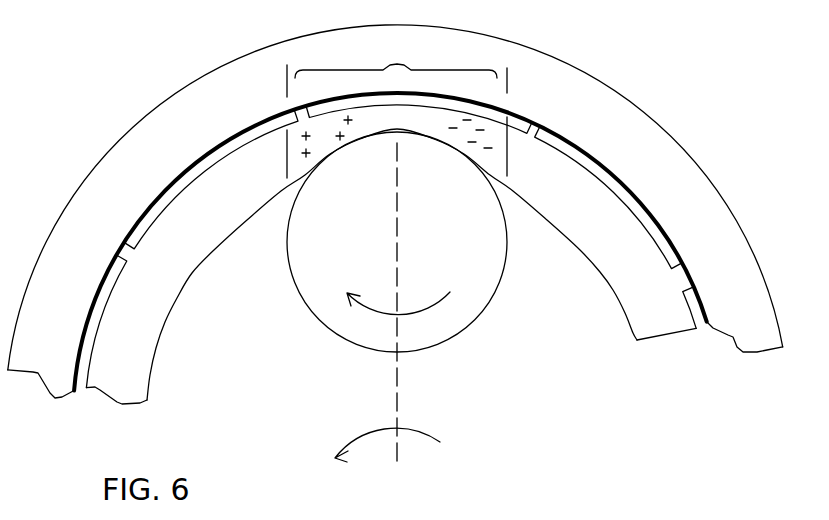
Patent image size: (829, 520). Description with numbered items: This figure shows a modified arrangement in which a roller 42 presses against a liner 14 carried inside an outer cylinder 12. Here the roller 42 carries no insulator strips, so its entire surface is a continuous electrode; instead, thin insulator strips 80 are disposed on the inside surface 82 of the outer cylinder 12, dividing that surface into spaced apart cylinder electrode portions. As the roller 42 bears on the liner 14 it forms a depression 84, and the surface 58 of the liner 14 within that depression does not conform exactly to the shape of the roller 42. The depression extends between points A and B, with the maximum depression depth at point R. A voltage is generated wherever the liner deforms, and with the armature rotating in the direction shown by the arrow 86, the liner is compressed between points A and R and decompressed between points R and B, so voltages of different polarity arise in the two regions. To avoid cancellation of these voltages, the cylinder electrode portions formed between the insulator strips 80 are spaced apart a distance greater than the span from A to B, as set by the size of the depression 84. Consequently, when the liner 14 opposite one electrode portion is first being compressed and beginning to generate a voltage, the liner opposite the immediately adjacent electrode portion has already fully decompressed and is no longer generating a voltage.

The outer cylinder 12 is at (620, 123).
The liner 14 is at (120, 362).
The roller 42 is at (497, 293).
The surface of the liner 58 is at (183, 282).
The insulator strips 80 is at (190, 182).
The inside surface of the outer cylinder 82 is at (390, 274).
The depression 84 is at (397, 109).
The arrow 86 is at (417, 437).
The point of maximum depression depth R is at (400, 130).
The point A is at (287, 185).
The point B is at (500, 183).